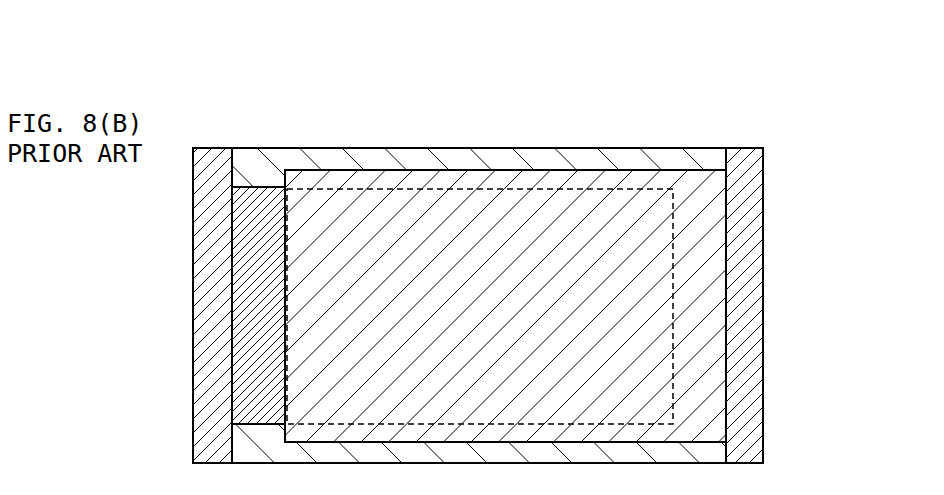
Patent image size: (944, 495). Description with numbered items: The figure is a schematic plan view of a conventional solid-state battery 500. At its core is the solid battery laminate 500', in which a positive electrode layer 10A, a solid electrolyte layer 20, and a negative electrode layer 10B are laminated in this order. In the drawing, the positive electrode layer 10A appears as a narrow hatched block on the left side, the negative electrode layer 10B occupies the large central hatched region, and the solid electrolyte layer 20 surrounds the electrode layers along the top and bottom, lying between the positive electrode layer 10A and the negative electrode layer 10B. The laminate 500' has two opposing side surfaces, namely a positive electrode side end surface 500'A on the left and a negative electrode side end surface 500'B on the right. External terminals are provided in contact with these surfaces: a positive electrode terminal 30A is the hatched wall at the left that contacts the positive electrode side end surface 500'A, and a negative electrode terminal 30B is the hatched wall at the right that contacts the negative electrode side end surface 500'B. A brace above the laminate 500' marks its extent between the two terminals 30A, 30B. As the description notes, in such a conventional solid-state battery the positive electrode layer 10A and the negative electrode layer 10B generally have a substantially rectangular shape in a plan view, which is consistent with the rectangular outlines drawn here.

The solid-state battery 500 is at (478, 241).
The solid battery laminate 500' is at (480, 117).
The solid electrolyte layer 20 is at (713, 163).
The positive electrode layer 10A is at (250, 247).
The negative electrode layer 10B is at (695, 255).
The positive electrode terminal 30A is at (208, 377).
The negative electrode terminal 30B is at (753, 393).
The positive electrode side end surface 500'A is at (152, 305).
The negative electrode side end surface 500'B is at (803, 305).